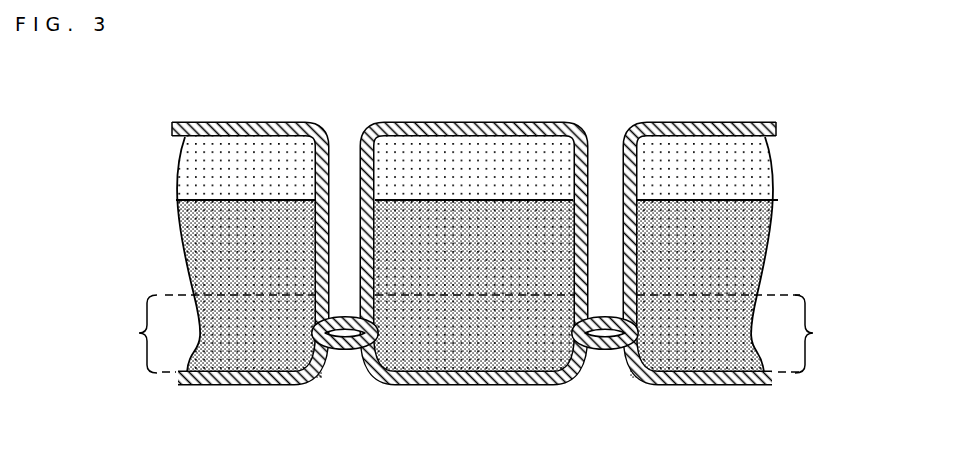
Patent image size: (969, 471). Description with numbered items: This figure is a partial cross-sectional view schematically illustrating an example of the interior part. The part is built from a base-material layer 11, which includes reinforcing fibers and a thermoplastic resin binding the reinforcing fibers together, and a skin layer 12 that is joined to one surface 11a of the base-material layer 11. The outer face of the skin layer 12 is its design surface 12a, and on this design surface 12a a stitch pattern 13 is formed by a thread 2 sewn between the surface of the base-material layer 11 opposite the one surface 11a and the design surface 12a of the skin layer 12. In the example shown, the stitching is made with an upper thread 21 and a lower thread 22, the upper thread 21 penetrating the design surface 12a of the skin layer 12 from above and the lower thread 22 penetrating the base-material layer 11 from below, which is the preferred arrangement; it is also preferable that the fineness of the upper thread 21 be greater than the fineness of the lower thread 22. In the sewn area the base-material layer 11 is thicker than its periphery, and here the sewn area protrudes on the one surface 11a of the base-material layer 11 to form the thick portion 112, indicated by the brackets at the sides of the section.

The thread 2 is at (474, 254).
The upper thread 21 is at (480, 122).
The lower thread 22 is at (460, 385).
The base-material layer 11 is at (190, 264).
The one surface 11a is at (188, 200).
The skin layer 12 is at (178, 148).
The design surface 12a is at (210, 122).
The stitch pattern 13 is at (258, 122).
The thick portion 112 is at (471, 334).